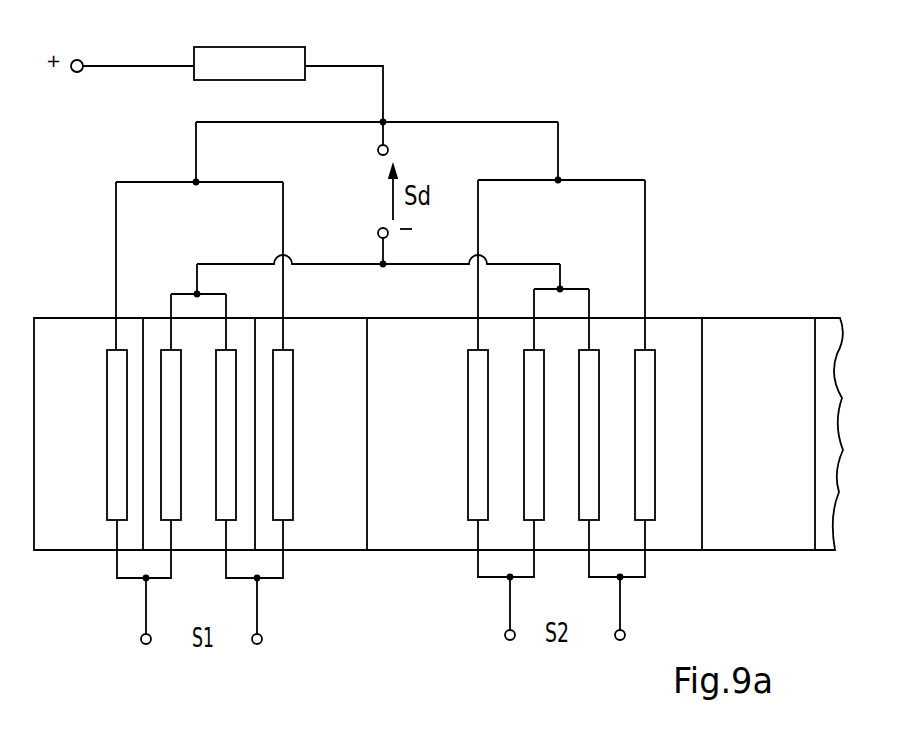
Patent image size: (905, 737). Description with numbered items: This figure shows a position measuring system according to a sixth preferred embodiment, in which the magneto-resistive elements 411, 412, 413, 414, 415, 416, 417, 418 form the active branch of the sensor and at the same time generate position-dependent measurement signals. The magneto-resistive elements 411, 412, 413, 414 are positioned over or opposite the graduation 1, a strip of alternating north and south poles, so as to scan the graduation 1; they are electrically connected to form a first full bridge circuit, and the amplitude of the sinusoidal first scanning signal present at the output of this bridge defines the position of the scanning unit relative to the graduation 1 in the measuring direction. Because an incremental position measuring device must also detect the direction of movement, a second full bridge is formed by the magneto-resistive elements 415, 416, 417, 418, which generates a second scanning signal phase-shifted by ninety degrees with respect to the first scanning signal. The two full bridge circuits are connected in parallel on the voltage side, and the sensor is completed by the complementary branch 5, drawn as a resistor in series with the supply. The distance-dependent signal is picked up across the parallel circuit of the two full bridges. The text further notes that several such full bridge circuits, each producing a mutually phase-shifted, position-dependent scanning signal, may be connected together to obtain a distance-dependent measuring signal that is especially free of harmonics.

The graduation 1 is at (835, 540).
The complementary branch 5 is at (268, 50).
The magneto-resistive element 411 is at (113, 480).
The magneto-resistive element 412 is at (176, 508).
The magneto-resistive element 413 is at (227, 365).
The magneto-resistive element 414 is at (286, 488).
The magneto-resistive element 415 is at (475, 451).
The magneto-resistive element 416 is at (535, 363).
The magneto-resistive element 417 is at (593, 362).
The magneto-resistive element 418 is at (655, 508).